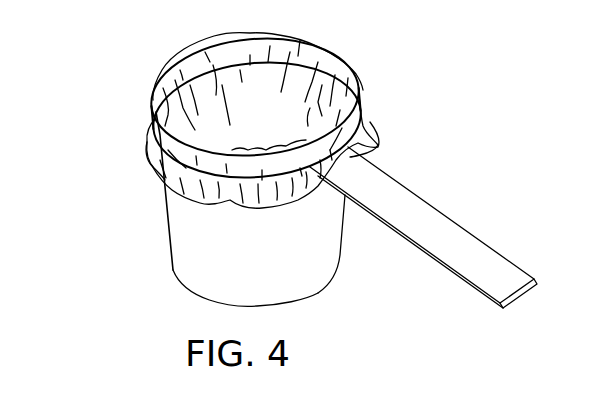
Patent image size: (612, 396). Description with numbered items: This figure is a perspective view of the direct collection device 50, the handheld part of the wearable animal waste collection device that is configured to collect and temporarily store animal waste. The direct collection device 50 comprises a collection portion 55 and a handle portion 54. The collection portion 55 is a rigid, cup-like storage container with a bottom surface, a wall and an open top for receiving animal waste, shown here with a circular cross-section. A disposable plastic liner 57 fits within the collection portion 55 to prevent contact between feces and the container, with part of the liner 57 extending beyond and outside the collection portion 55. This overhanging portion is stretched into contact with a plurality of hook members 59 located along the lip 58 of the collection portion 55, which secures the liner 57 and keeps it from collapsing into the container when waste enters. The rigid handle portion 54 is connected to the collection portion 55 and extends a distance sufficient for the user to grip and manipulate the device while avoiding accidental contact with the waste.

The direct collection device 50 is at (422, 107).
The handle portion 54 is at (455, 235).
The collection portion 55 is at (217, 267).
The disposable plastic liner 57 is at (192, 185).
The lip 58 is at (162, 140).
The hook members 59 is at (297, 192).